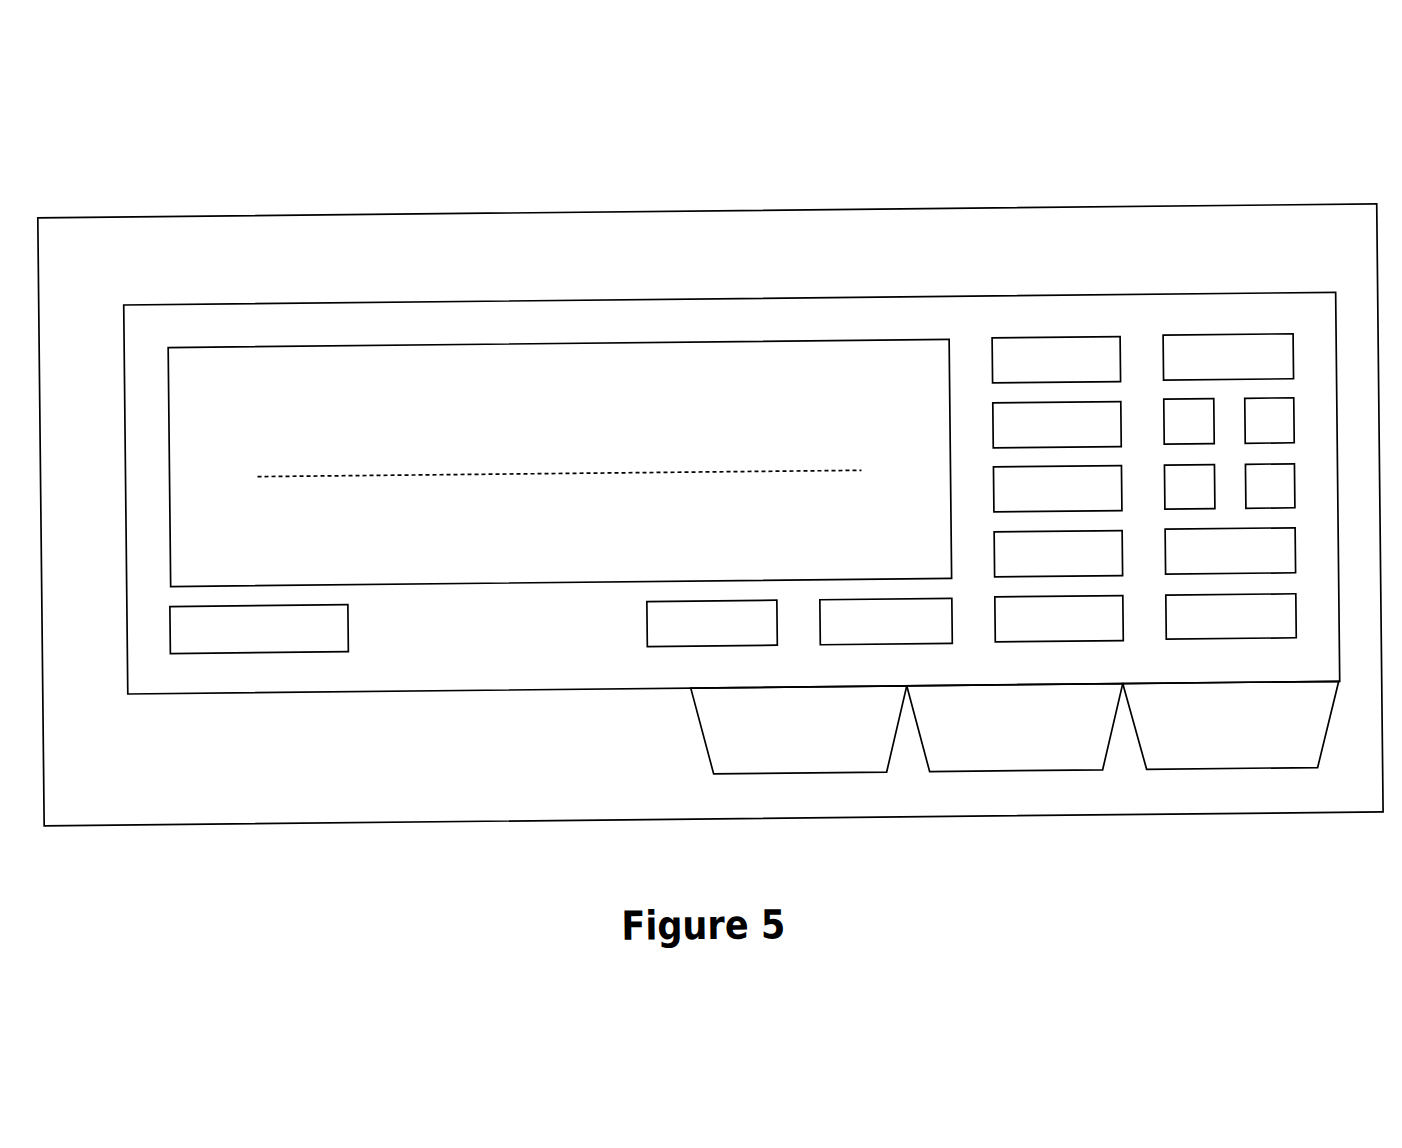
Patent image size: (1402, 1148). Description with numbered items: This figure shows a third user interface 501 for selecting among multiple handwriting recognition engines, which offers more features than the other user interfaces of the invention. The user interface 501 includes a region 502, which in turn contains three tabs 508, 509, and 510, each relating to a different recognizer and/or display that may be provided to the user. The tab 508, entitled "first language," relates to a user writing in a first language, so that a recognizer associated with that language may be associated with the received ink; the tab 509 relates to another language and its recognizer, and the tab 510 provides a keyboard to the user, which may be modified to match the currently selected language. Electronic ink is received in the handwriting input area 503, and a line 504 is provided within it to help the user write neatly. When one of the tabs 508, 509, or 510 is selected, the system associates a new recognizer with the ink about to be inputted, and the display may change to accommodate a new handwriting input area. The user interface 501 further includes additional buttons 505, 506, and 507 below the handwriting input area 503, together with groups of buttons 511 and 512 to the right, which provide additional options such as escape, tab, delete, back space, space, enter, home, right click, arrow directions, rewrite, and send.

The user interface 501 is at (713, 210).
The region 502 is at (715, 298).
The handwriting input area 503 is at (564, 341).
The line 504 is at (343, 472).
The button 505 is at (346, 624).
The button 506 is at (716, 645).
The button 507 is at (886, 645).
The tab 508 is at (1209, 773).
The tab 509 is at (997, 774).
The tab 510 is at (799, 774).
The buttons 511 is at (1123, 169).
The buttons 512 is at (1296, 171).